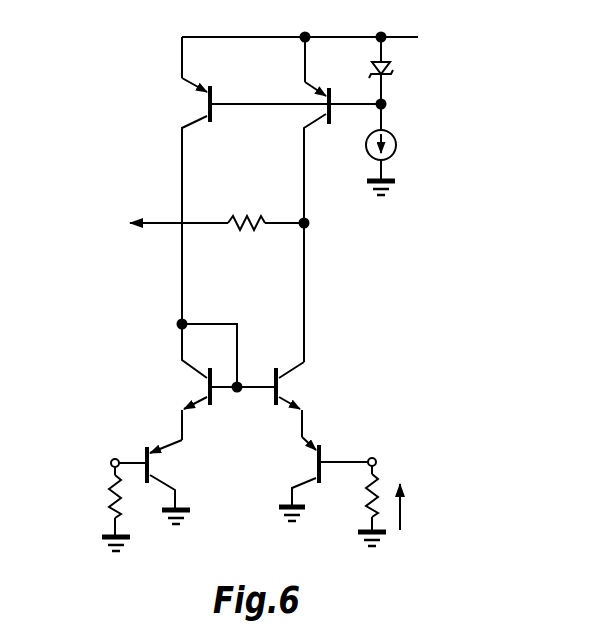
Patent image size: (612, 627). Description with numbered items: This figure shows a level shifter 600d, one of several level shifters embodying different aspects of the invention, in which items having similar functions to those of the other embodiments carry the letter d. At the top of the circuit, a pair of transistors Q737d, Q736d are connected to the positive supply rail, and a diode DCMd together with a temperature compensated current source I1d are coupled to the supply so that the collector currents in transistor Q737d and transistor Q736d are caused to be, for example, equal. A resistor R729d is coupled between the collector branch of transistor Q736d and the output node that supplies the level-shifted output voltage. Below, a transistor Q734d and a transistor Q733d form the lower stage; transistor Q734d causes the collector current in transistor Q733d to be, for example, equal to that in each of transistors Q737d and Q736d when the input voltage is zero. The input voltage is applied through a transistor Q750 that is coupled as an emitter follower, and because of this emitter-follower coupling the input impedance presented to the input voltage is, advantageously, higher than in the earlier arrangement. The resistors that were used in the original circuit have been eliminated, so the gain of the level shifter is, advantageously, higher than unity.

The level shifter 600d is at (444, 287).
The transistor Q737d is at (229, 180).
The transistor Q736d is at (322, 199).
The diode DCMd is at (390, 68).
The temperature compensated current source I1d is at (396, 145).
The resistor R729d is at (219, 215).
The transistor Q734d is at (203, 382).
The transistor Q733d is at (309, 399).
The transistor Q750 is at (327, 476).